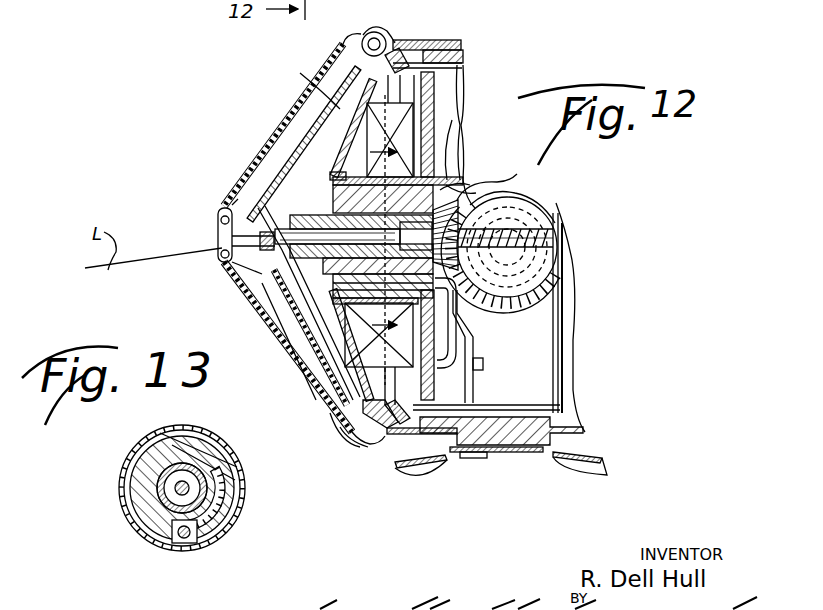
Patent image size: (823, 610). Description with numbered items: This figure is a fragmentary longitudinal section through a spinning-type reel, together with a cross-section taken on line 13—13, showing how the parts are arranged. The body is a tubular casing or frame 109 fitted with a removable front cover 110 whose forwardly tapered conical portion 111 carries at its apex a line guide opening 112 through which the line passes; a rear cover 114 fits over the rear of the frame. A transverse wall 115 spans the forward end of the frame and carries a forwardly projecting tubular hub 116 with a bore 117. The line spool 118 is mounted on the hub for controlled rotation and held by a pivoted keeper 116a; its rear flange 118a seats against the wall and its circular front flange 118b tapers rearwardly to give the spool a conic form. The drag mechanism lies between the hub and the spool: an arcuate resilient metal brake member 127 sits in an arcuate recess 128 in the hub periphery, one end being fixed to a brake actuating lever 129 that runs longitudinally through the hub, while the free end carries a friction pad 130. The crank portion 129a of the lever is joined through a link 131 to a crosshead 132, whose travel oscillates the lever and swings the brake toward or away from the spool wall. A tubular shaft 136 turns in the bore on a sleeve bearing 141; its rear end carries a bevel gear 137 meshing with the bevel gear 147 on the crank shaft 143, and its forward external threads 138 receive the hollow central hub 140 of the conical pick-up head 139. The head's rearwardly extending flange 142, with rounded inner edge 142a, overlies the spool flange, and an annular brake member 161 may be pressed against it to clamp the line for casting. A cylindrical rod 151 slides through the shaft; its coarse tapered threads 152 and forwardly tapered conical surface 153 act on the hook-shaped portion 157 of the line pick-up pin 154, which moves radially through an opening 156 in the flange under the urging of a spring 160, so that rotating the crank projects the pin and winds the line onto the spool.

In FIG. 12, the tubular casing or frame 109 is at (465, 46).
In FIG. 12, the front cover 110 is at (418, 40).
In FIG. 12, the forwardly tapered conical portion 111 is at (271, 126).
In FIG. 12, the line guide opening 112 is at (217, 220).
In FIG. 12, the rear cover 114 is at (580, 441).
In FIG. 12, the transverse wall 115 is at (455, 92).
In FIG. 12, the tubular hub 116 is at (349, 158).
In FIG. 13, the tubular hub 116 is at (237, 468).
In FIG. 12, the pivoted keeper 116a is at (330, 176).
In FIG. 12, the bore 117 is at (451, 143).
In FIG. 13, the bore 117 is at (154, 472).
In FIG. 12, the line spool 118 is at (300, 108).
In FIG. 13, the line spool 118 is at (194, 429).
In FIG. 12, the rear or inner end flange 118a is at (435, 96).
In FIG. 12, the circular front flange 118b is at (308, 79).
In FIG. 13, the arcuate resilient metal brake member 127 is at (193, 560).
In FIG. 13, the arcuate recess 128 is at (240, 505).
In FIG. 12, the brake actuating lever 129 is at (332, 260).
In FIG. 13, the brake actuating lever 129 is at (180, 550).
In FIG. 12, the crank portion 129a is at (473, 342).
In FIG. 13, the friction pad 130 is at (238, 521).
In FIG. 12, the link 131 is at (480, 378).
In FIG. 12, the crosshead 132 is at (473, 337).
In FIG. 12, the tubular shaft 136 is at (456, 194).
In FIG. 13, the tubular shaft 136 is at (212, 452).
In FIG. 12, the bevel gear 137 is at (469, 206).
In FIG. 12, the external threads 138 is at (333, 196).
In FIG. 12, the pick-up head 139 is at (275, 168).
In FIG. 12, the hollow central hub 140 is at (260, 189).
In FIG. 12, the sleeve bearing 141 is at (451, 166).
In FIG. 13, the sleeve bearing 141 is at (138, 527).
In FIG. 12, the rearwardly extending flange 142 is at (344, 50).
In FIG. 12, the rounded inner edge 142a is at (375, 30).
In FIG. 12, the crank shaft 143 is at (530, 206).
In FIG. 12, the bevel gear 147 is at (572, 278).
In FIG. 12, the cylindrical rod 151 is at (562, 235).
In FIG. 13, the cylindrical rod 151 is at (169, 491).
In FIG. 12, the threads 152 is at (240, 266).
In FIG. 12, the forwardly tapered conical surface 153 is at (217, 241).
In FIG. 12, the line pick-up pin 154 is at (300, 328).
In FIG. 12, the opening 156 is at (347, 441).
In FIG. 12, the hook-shaped portion 157 is at (227, 201).
In FIG. 12, the spring 160 is at (282, 293).
In FIG. 12, the annular brake member 161 is at (394, 43).
In FIG. 12, the section line 13 is at (379, 240).